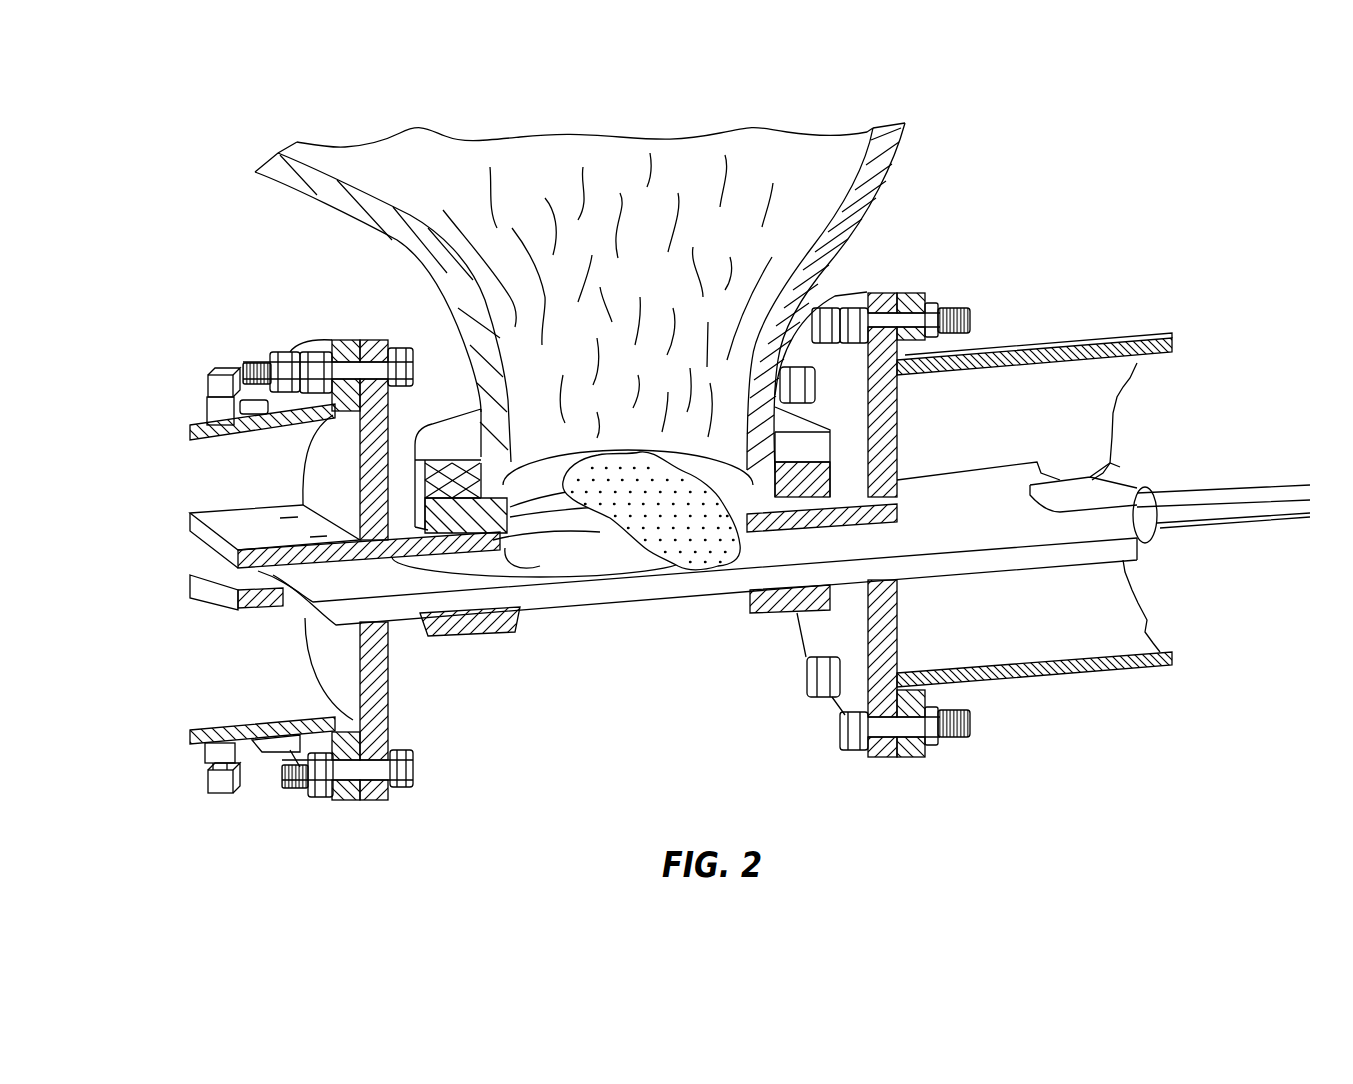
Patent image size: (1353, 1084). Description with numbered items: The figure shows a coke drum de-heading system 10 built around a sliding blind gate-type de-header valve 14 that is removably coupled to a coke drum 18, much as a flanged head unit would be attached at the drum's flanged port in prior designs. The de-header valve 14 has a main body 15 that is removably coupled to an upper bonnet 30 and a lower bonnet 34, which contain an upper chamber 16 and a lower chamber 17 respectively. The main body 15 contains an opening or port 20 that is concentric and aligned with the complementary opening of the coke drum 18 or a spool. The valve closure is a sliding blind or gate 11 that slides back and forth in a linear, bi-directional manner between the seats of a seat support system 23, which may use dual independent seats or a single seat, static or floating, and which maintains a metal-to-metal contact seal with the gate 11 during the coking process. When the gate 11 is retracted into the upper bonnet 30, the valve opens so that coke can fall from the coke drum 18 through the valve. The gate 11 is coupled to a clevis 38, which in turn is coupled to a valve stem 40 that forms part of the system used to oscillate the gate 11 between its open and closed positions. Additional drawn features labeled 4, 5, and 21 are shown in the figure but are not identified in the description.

The hopper 4 is at (768, 207).
The filter sponge 5 is at (677, 553).
The de-heading system 10 is at (1163, 237).
The gate 11 is at (695, 590).
The de-header valve 14 is at (1003, 747).
The main body 15 is at (388, 710).
The upper chamber 16 is at (240, 462).
The lower chamber 17 is at (232, 695).
The coke drum 18 is at (898, 168).
The opening or port 20 is at (542, 622).
The tray plate 21 is at (590, 607).
The seat support system 23 is at (522, 565).
The upper bonnet 30 is at (997, 352).
The lower bonnet 34 is at (203, 415).
The clevis 38 is at (1090, 477).
The valve stem 40 is at (1253, 500).